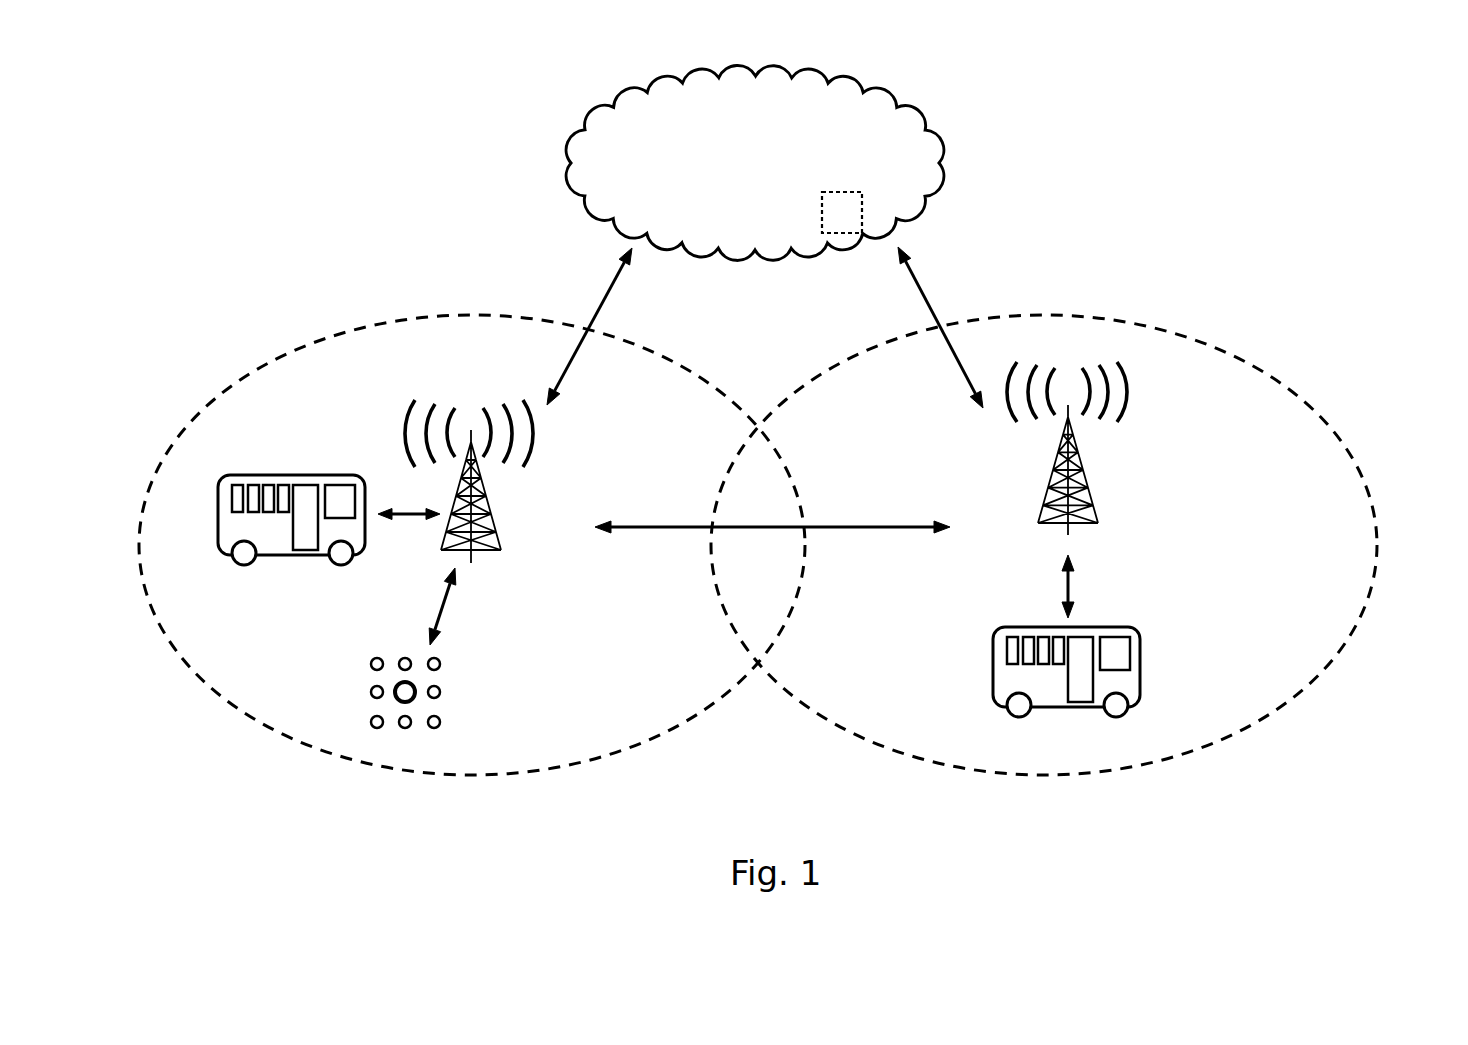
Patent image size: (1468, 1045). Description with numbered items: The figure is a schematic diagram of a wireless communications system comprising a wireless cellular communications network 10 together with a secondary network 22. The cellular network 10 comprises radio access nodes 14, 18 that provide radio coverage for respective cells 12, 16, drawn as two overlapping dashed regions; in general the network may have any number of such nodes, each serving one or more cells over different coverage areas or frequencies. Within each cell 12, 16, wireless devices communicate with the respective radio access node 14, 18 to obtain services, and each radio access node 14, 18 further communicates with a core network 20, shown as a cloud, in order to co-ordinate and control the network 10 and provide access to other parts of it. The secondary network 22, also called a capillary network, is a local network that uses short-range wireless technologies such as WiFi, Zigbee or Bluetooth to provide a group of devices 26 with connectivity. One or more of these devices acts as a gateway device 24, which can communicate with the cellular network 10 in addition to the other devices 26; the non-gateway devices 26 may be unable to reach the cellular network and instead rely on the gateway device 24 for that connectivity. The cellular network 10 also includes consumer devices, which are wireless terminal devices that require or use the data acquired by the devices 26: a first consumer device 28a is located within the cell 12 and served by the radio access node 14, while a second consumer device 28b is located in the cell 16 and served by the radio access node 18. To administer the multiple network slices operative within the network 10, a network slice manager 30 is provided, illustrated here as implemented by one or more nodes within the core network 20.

The wireless cellular communications network 10 is at (1207, 117).
The cell 12 is at (142, 558).
The radio access node 14 is at (485, 493).
The cell 16 is at (1378, 606).
The radio access node 18 is at (1060, 462).
The core network 20 is at (612, 93).
The secondary network 22 is at (392, 777).
The gateway device 24 is at (412, 700).
The device 26 is at (440, 726).
The first consumer device 28a is at (322, 473).
The second consumer device 28b is at (1107, 627).
The network slice manager 30 is at (862, 207).